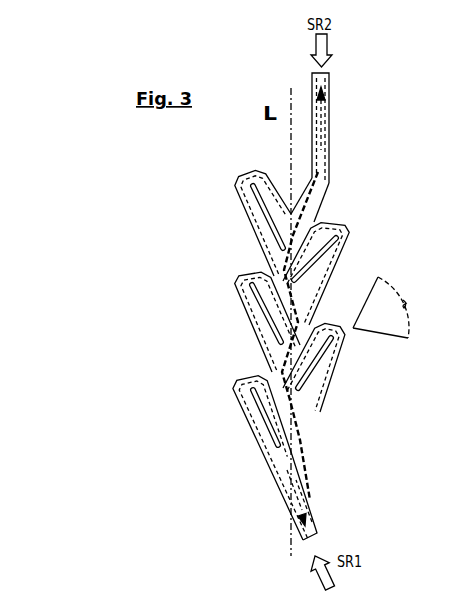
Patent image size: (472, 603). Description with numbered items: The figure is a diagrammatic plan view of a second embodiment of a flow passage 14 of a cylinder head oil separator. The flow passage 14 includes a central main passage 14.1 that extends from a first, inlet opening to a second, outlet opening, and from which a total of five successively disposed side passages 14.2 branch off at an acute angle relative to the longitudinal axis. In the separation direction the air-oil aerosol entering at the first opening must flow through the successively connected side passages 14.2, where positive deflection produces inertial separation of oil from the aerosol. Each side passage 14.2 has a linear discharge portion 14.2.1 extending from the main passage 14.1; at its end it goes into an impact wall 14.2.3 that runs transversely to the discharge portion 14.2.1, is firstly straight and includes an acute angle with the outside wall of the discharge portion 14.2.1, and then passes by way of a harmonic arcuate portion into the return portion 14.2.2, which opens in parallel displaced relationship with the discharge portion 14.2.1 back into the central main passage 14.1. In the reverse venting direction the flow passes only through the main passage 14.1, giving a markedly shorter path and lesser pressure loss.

The flow passage 14 is at (214, 257).
The central main passage 14.1 is at (330, 176).
The side passages 14.2 is at (246, 422).
The linear discharge portion 14.2.1 is at (271, 440).
The return portion 14.2.2 is at (283, 414).
The impact wall 14.2.3 is at (265, 395).